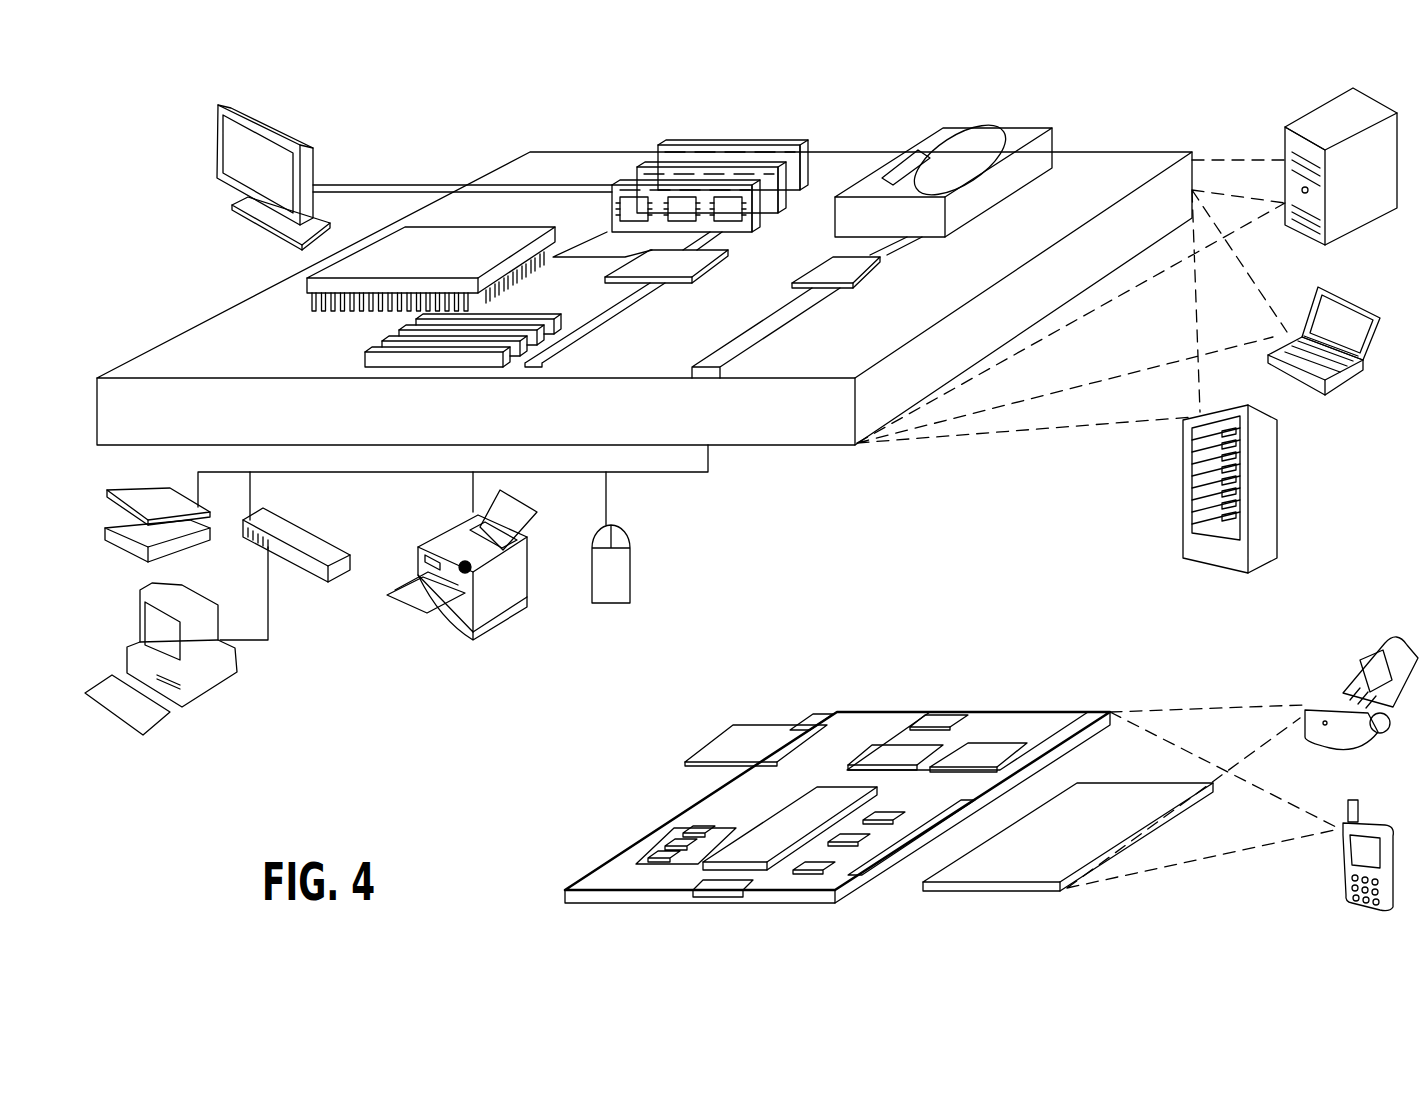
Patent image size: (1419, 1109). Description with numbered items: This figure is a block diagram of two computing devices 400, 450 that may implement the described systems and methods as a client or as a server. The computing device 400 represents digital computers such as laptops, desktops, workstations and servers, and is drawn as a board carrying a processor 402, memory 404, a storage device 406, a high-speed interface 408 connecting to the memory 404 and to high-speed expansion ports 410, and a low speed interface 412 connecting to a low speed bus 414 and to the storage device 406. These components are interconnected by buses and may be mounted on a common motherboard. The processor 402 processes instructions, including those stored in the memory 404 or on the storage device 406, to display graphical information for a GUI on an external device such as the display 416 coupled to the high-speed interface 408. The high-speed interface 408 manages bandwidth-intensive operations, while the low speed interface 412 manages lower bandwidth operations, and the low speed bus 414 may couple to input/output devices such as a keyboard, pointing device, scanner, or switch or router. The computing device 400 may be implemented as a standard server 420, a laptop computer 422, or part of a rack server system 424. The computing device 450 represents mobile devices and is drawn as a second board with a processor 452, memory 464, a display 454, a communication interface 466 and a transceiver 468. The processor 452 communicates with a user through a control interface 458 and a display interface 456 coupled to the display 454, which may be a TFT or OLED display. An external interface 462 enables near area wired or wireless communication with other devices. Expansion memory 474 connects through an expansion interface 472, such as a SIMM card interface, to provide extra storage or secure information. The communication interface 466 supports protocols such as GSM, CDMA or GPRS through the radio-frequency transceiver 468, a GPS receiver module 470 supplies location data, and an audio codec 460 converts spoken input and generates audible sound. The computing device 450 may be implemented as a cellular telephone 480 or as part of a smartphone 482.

The computing device 400 is at (442, 112).
The processor 402 is at (265, 288).
The memory 404 is at (668, 143).
The storage device 406 is at (945, 150).
The high-speed interface 408 is at (637, 262).
The high-speed expansion ports 410 is at (390, 337).
The low speed interface 412 is at (857, 273).
The low speed bus 414 is at (713, 378).
The display 416 is at (218, 104).
The standard server 420 is at (1285, 135).
The laptop computer 422 is at (1318, 287).
The rack server system 424 is at (1183, 520).
The computing device 450 is at (812, 678).
The processor 452 is at (753, 900).
The display 454 is at (1067, 892).
The display interface 456 is at (850, 870).
The control interface 458 is at (893, 845).
The audio codec 460 is at (958, 880).
The external interface 462 is at (723, 892).
The memory 464 is at (695, 835).
The communication interface 466 is at (880, 752).
The transceiver 468 is at (975, 755).
The GPS receiver module 470 is at (955, 712).
The expansion interface 472 is at (808, 723).
The expansion memory 474 is at (733, 725).
The cellular telephone 480 is at (1370, 645).
The smartphone 482 is at (1345, 802).